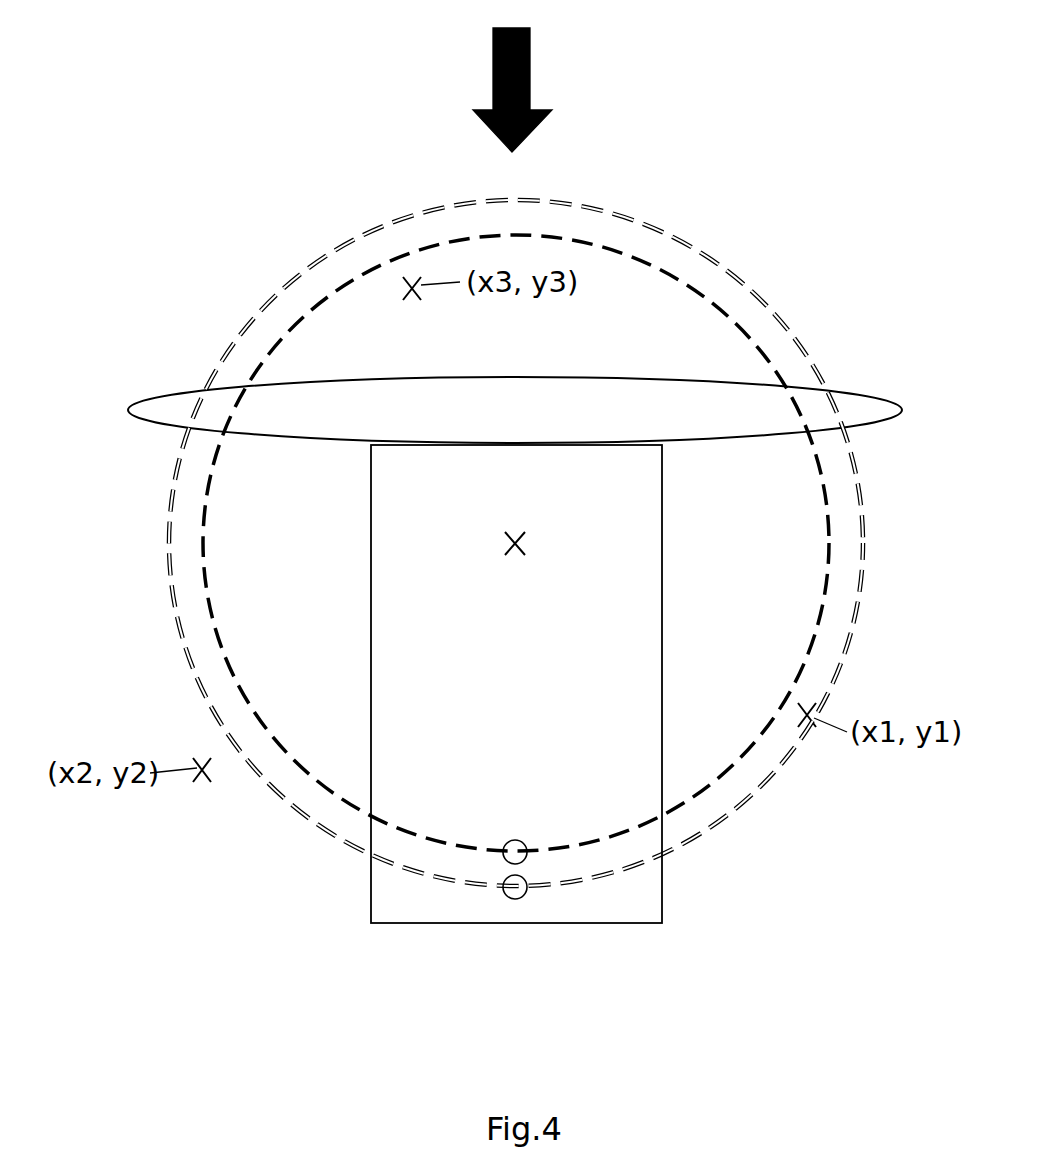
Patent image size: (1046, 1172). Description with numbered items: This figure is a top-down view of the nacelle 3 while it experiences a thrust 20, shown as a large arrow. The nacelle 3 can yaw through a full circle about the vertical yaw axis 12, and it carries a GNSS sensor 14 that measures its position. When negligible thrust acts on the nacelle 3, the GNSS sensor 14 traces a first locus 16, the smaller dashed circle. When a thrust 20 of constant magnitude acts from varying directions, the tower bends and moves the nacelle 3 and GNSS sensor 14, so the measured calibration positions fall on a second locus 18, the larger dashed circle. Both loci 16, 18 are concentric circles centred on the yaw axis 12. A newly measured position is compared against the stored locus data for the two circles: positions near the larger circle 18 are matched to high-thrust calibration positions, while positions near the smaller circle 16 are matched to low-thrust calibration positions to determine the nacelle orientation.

The thrust 20 is at (530, 67).
The second locus 18 is at (678, 233).
The first locus 16 is at (725, 310).
The yaw axis 12 is at (523, 552).
The GNSS sensor 14 is at (515, 888).
The nacelle 3 is at (662, 892).